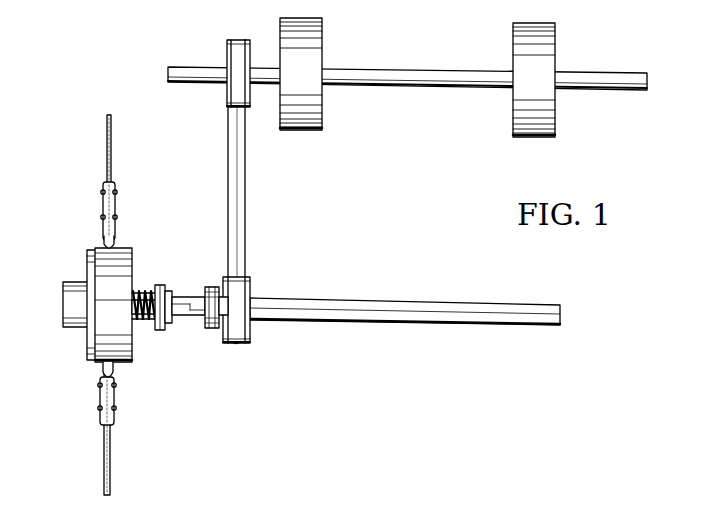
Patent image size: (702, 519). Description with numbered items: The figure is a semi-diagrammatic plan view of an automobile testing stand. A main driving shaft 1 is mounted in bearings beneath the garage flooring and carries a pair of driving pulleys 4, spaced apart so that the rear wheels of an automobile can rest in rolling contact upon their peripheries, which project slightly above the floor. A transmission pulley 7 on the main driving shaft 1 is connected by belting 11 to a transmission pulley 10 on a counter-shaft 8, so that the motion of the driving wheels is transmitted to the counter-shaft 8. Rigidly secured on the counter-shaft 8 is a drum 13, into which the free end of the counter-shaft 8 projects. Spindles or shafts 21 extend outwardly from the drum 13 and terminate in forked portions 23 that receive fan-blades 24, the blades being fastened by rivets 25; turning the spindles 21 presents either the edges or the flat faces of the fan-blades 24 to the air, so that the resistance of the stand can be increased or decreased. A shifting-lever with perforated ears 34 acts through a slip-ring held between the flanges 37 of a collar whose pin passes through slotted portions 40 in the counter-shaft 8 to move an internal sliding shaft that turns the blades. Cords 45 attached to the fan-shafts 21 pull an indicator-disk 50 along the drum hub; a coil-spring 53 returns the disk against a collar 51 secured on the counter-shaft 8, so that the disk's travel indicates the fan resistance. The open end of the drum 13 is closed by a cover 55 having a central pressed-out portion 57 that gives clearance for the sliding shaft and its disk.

The main driving shaft 1 is at (407, 70).
The driving pulleys 4 is at (297, 130).
The transmission pulley 7 is at (228, 56).
The counter-shaft 8 is at (380, 305).
The transmission pulley 10 is at (252, 283).
The belting 11 is at (240, 203).
The drum 13 is at (130, 256).
The spindles or shafts 21 is at (114, 250).
The forked portions 23 is at (118, 198).
The fan-blades 24 is at (112, 127).
The rivets 25 is at (101, 191).
The perforated ears 34 is at (212, 285).
The flanges 37 is at (204, 327).
The slotted portions 40 is at (196, 320).
The cords 45 is at (143, 322).
The indicator-disk 50 is at (160, 288).
The collar 51 is at (167, 332).
The coil-spring 53 is at (142, 297).
The closure or cover 55 is at (88, 260).
The pressed-out portion 57 is at (68, 301).